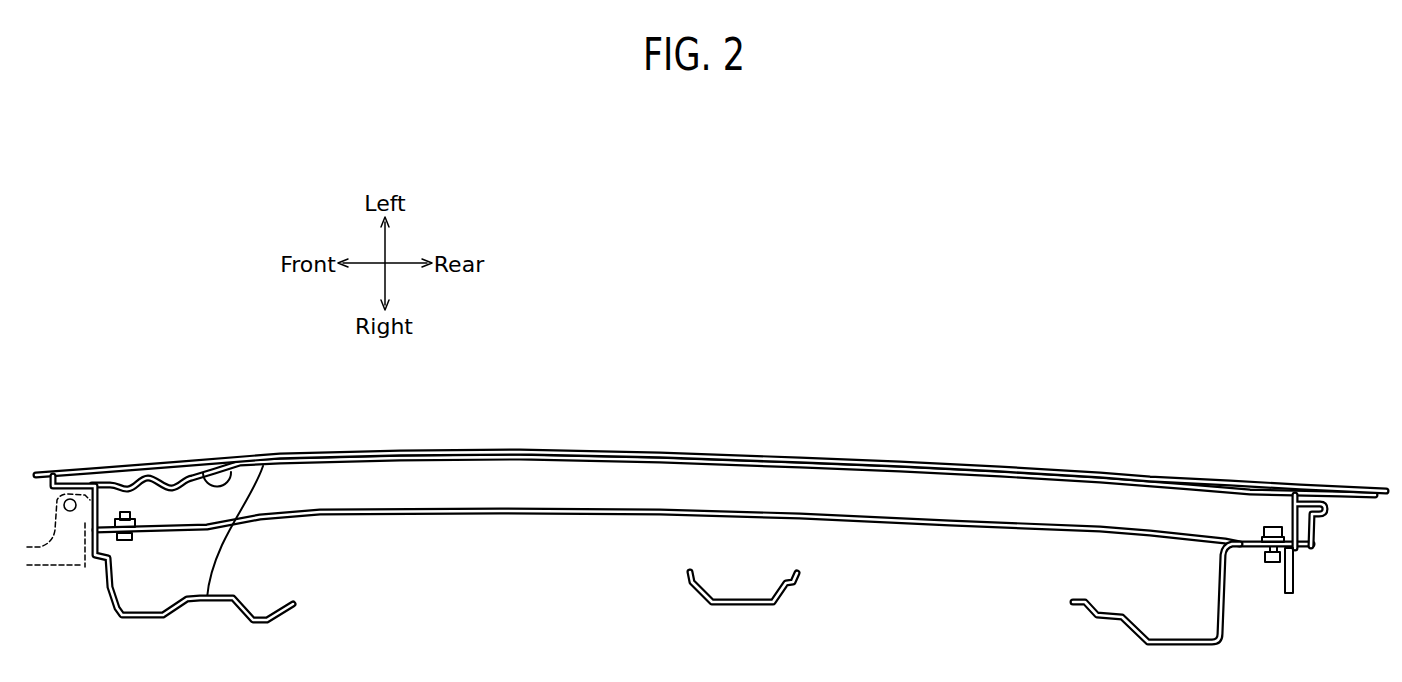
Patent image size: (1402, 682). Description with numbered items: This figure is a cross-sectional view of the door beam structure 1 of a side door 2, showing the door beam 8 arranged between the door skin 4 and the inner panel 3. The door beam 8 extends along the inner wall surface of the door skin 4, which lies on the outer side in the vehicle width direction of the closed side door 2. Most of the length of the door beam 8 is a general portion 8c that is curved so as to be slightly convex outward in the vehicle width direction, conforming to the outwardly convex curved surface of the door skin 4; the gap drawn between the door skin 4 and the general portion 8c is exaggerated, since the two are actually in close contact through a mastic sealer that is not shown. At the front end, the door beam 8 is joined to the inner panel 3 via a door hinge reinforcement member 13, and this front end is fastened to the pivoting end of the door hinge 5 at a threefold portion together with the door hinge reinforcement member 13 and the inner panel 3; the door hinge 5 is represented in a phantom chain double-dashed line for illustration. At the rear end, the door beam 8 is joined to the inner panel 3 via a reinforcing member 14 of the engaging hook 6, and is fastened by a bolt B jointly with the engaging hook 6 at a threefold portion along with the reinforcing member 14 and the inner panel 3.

The door beam structure 1 is at (736, 353).
The side door 2 is at (273, 385).
The inner panel 3 is at (268, 462).
The door skin 4 is at (163, 460).
The door hinge 5 is at (48, 568).
The engaging hook 6 is at (1295, 570).
The door beam 8 is at (218, 458).
The general portion 8c is at (562, 516).
The door hinge reinforcement member 13 is at (98, 506).
The reinforcing member 14 is at (1290, 513).
The bolt B is at (1272, 566).